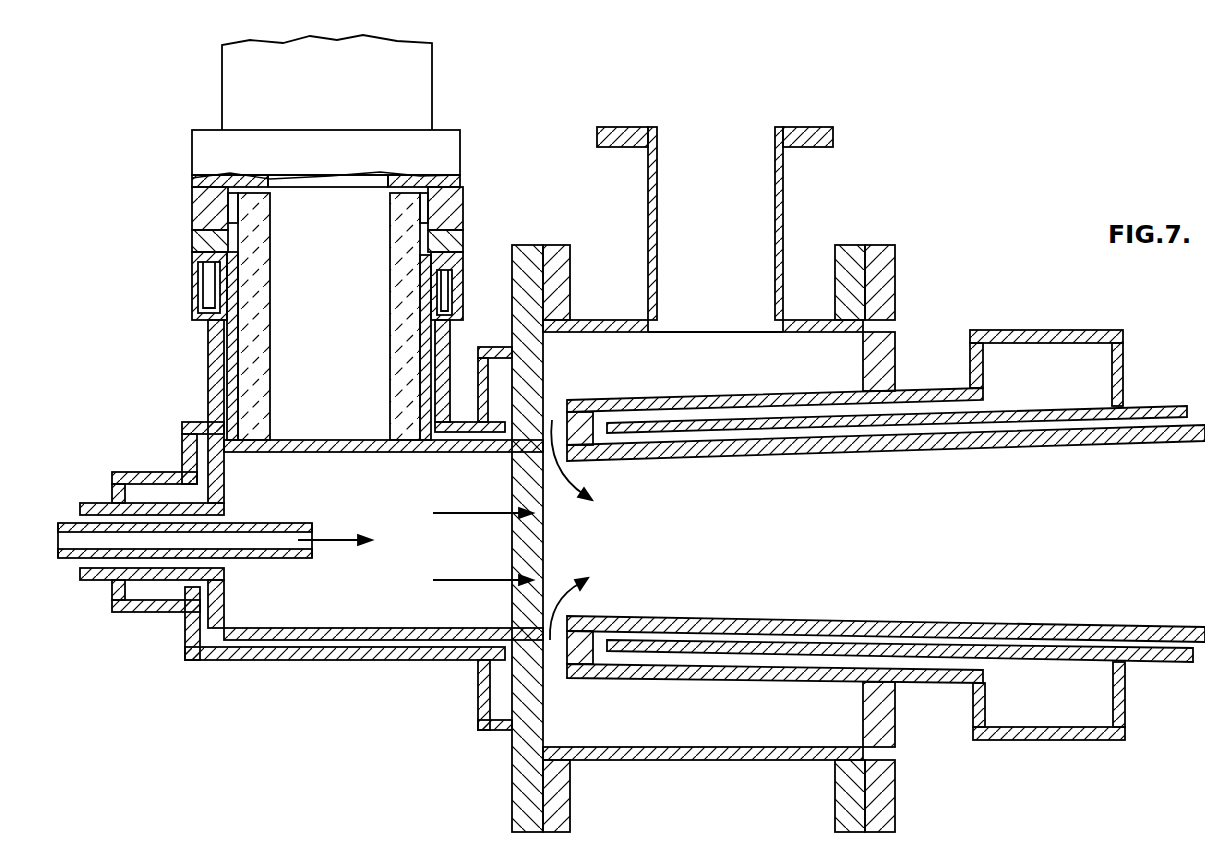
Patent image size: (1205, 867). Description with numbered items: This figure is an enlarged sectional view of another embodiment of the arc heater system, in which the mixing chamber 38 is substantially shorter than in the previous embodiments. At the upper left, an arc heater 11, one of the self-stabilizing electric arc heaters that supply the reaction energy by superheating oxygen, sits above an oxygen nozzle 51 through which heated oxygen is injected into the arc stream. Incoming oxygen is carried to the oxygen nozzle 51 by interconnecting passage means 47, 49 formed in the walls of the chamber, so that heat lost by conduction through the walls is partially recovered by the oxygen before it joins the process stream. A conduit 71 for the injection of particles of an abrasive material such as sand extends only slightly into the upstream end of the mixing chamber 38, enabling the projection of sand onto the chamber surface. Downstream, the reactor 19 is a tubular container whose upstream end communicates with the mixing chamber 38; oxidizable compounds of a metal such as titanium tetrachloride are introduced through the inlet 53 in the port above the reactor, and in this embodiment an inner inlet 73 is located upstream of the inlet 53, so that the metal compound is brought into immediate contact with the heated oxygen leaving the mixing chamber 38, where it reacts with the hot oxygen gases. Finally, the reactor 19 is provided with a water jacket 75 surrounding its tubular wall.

The arc heater 11 is at (232, 73).
The oxygen nozzle 51 is at (248, 187).
The inlet 53 is at (778, 196).
The inner inlet 73 is at (570, 425).
The reactor 19 is at (989, 443).
The water jacket 75 is at (920, 674).
The conduit 71 is at (78, 562).
The interconnecting passage means 49 is at (200, 604).
The interconnecting passage means 47 is at (305, 648).
The mixing chamber 38 is at (437, 622).